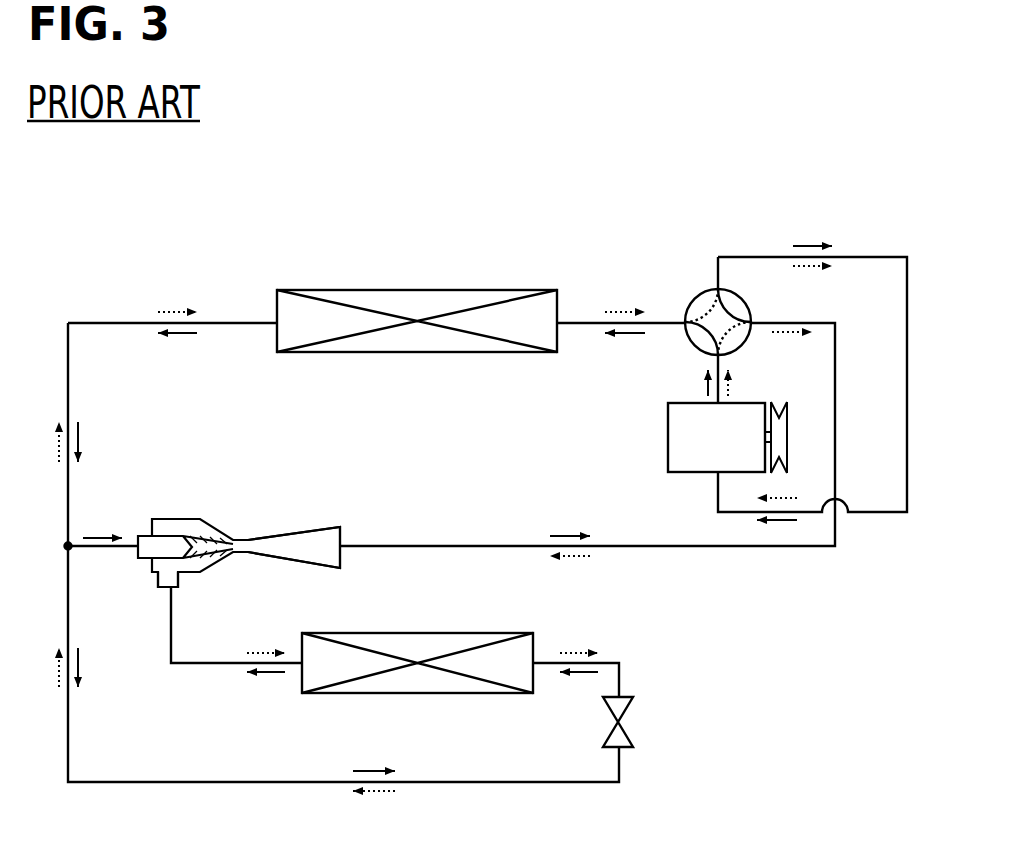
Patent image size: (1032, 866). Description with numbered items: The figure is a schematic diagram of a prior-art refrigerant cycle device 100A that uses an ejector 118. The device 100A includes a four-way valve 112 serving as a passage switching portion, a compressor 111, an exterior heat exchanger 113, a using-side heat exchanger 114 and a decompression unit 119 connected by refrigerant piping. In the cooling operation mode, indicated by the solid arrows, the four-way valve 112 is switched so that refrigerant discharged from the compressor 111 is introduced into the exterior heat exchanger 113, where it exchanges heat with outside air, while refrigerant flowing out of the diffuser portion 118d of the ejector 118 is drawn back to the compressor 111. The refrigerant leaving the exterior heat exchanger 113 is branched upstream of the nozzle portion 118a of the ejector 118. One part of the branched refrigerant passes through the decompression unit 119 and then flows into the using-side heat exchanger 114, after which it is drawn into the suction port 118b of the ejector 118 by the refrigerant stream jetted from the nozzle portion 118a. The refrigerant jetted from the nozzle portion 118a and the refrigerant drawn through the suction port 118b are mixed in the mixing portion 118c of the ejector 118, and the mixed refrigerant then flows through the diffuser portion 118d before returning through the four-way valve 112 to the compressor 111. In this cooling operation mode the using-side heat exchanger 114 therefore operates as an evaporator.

The refrigerant cycle device 100A is at (603, 263).
The compressor 111 is at (668, 432).
The four-way valve 112 is at (752, 310).
The exterior heat exchanger 113 is at (447, 271).
The using-side heat exchanger 114 is at (447, 707).
The ejector 118 is at (219, 533).
The nozzle portion 118a is at (185, 537).
The suction port 118b is at (160, 585).
The mixing portion 118c is at (245, 548).
The diffuser portion 118d is at (290, 547).
The decompression unit 119 is at (628, 718).